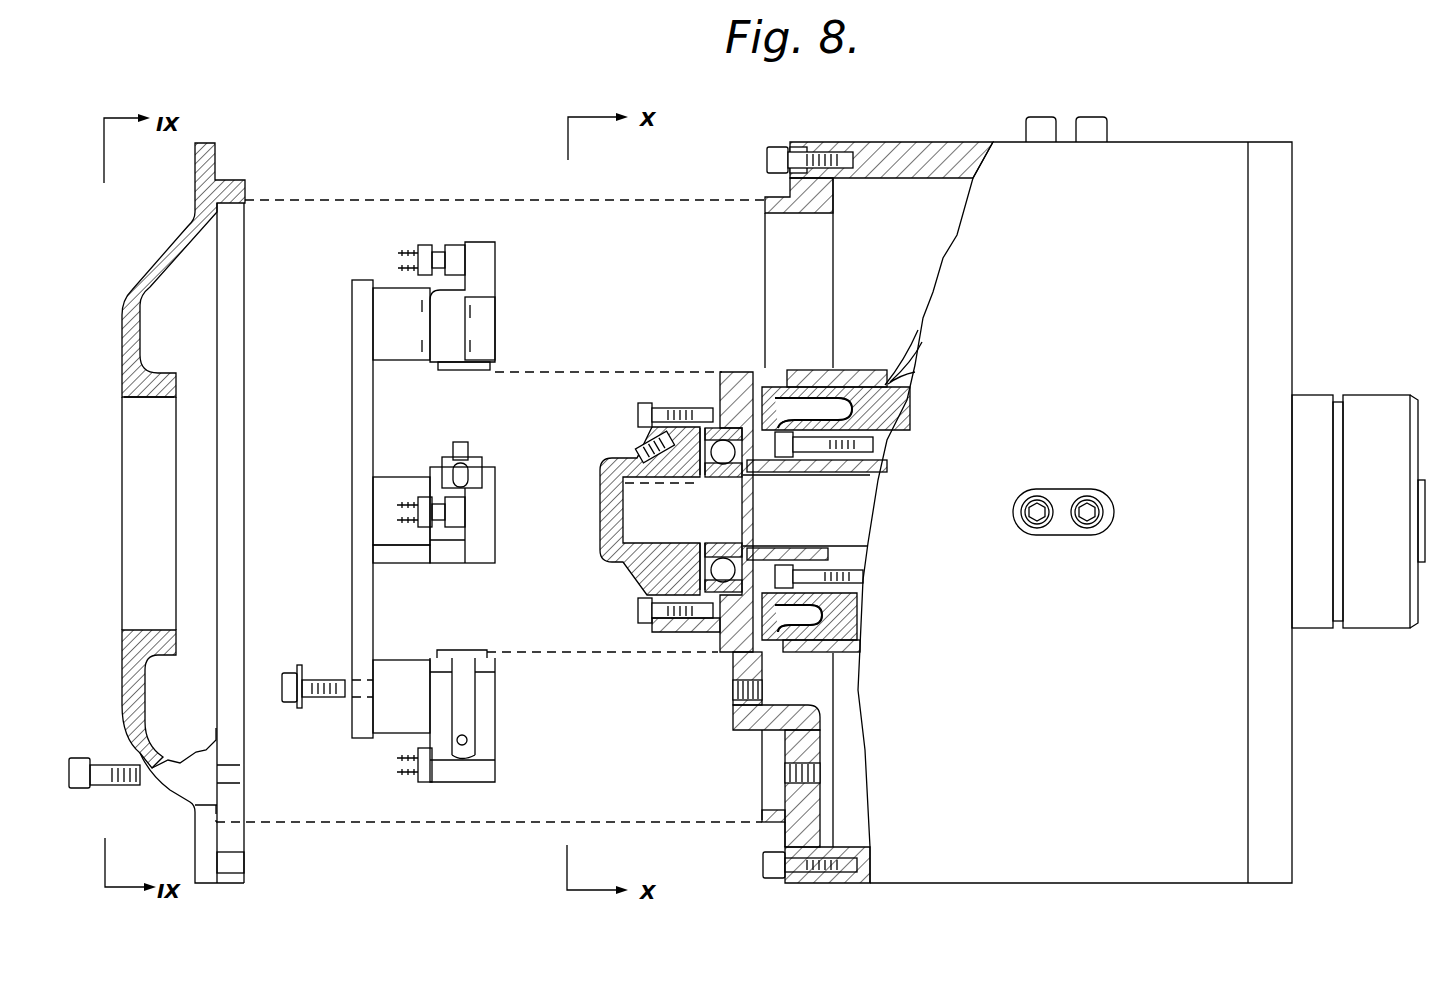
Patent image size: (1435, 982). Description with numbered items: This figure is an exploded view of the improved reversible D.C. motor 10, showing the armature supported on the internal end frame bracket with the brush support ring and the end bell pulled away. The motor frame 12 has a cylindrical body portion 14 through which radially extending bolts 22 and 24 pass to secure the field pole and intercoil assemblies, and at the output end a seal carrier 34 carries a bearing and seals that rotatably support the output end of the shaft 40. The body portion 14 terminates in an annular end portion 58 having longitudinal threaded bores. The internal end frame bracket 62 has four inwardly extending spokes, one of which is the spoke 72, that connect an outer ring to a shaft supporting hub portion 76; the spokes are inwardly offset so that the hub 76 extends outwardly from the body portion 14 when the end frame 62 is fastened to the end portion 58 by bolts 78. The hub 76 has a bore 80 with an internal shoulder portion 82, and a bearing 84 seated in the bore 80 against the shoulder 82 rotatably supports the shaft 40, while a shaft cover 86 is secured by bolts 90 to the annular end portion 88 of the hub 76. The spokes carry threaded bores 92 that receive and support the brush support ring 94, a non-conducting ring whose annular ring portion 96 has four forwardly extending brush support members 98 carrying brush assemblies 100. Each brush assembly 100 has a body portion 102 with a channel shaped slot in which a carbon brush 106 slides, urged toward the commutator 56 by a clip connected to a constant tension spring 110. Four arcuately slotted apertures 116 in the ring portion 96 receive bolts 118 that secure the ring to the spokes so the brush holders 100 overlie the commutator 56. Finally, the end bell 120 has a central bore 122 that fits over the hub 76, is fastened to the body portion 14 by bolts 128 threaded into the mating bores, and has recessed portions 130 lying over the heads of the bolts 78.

The reversible D.C. motor 10 is at (858, 124).
The motor frame 12 is at (1154, 136).
The cylindrical body portion 14 is at (938, 142).
The bolt 22 is at (1082, 117).
The bolt 24 is at (1034, 117).
The seal carrier 34 is at (1362, 395).
The shaft 40 is at (830, 507).
The commutator 56 is at (845, 372).
The annular end portion 58 is at (818, 133).
The internal end frame bracket 62 is at (746, 742).
The spoke 72 is at (735, 722).
The hub portion 76 is at (690, 633).
The bolt 78 is at (767, 156).
The bore 80 is at (762, 556).
The internal shoulder portion 82 is at (718, 628).
The bearing 84 is at (714, 477).
The shaft cover 86 is at (642, 573).
The annular end portion 88 is at (672, 626).
The bolt 90 is at (638, 411).
The threaded bore 92 is at (735, 695).
The brush support ring 94 is at (338, 341).
The annular ring portion 96 is at (352, 379).
The brush support member 98 is at (393, 355).
The brush assembly 100 is at (498, 319).
The body portion 102 is at (487, 284).
The carbon brush 106 is at (462, 372).
The constant tension spring 110 is at (462, 724).
The arcuately slotted aperture 116 is at (350, 700).
The bolt 118 is at (310, 688).
The end bell 120 is at (122, 328).
The central bore 122 is at (130, 400).
The bolt 128 is at (88, 790).
The recessed portion 130 is at (236, 864).